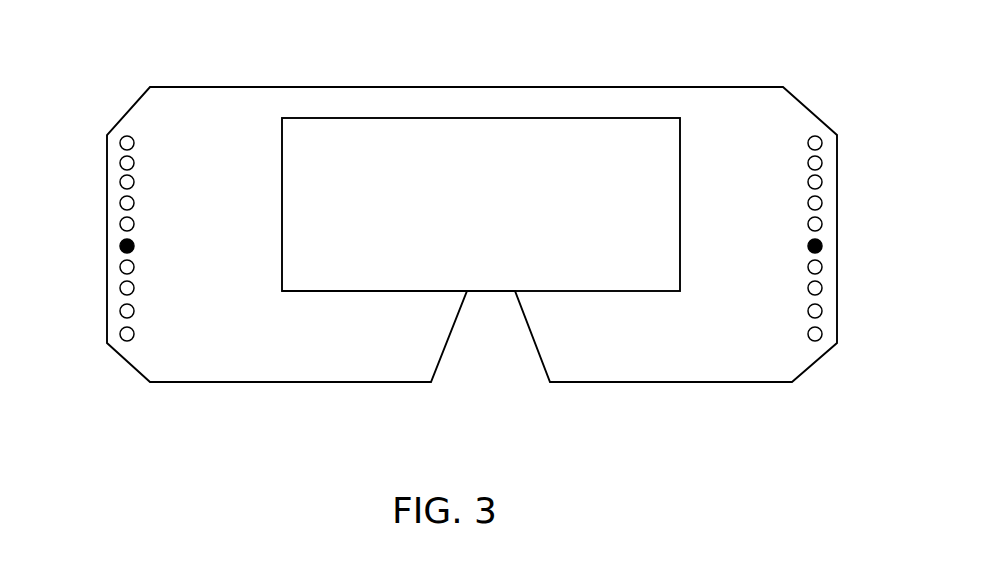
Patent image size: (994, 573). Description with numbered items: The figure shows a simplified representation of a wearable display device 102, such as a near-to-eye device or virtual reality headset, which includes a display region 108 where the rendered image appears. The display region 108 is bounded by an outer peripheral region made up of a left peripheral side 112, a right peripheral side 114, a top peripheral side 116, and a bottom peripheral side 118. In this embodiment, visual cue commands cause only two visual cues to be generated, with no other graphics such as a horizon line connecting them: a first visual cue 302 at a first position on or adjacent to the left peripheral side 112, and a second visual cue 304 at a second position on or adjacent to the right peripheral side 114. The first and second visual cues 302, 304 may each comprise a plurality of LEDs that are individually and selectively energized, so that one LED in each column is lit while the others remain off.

The display device 102 is at (741, 87).
The display region 108 is at (566, 136).
The left peripheral side 112 is at (282, 156).
The right peripheral side 114 is at (680, 148).
The top peripheral side 116 is at (381, 128).
The bottom peripheral side 118 is at (380, 283).
The first visual cue 302 is at (119, 246).
The second visual cue 304 is at (823, 246).